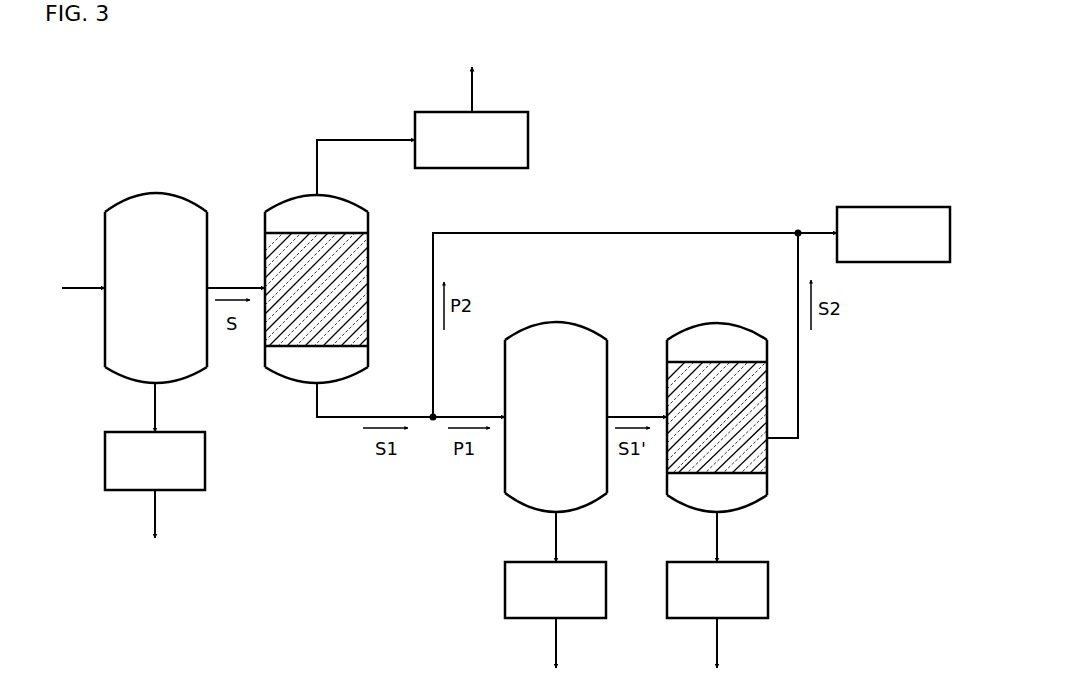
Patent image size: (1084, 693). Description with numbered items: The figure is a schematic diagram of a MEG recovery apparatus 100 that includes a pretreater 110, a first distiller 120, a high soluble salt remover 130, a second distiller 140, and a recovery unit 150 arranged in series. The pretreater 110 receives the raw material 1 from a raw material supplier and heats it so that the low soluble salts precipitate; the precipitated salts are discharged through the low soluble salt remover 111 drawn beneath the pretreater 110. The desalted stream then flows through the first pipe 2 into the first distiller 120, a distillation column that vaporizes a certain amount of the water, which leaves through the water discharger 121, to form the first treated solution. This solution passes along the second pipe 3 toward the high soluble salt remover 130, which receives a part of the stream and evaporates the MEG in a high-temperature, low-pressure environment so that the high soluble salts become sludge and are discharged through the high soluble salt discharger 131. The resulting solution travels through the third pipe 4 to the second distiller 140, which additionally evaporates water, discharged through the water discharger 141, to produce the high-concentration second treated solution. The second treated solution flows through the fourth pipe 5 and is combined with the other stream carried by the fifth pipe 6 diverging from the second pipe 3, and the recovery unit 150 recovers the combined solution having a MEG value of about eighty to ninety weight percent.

The MEG recovery apparatus 100 is at (140, 64).
The raw material 1 is at (74, 288).
The first pipe 2 is at (233, 284).
The second pipe 3 is at (337, 420).
The third pipe 4 is at (634, 413).
The fourth pipe 5 is at (798, 380).
The fifth pipe 6 is at (648, 232).
The pretreater 110 is at (160, 195).
The low soluble salt remover 111 is at (175, 432).
The first distiller 120 is at (333, 193).
The water discharger 121 is at (490, 112).
The high soluble salt remover 130 is at (562, 322).
The high soluble salt discharger 131 is at (576, 562).
The second distiller 140 is at (722, 322).
The water discharger 141 is at (737, 562).
The recovery unit 150 is at (893, 207).